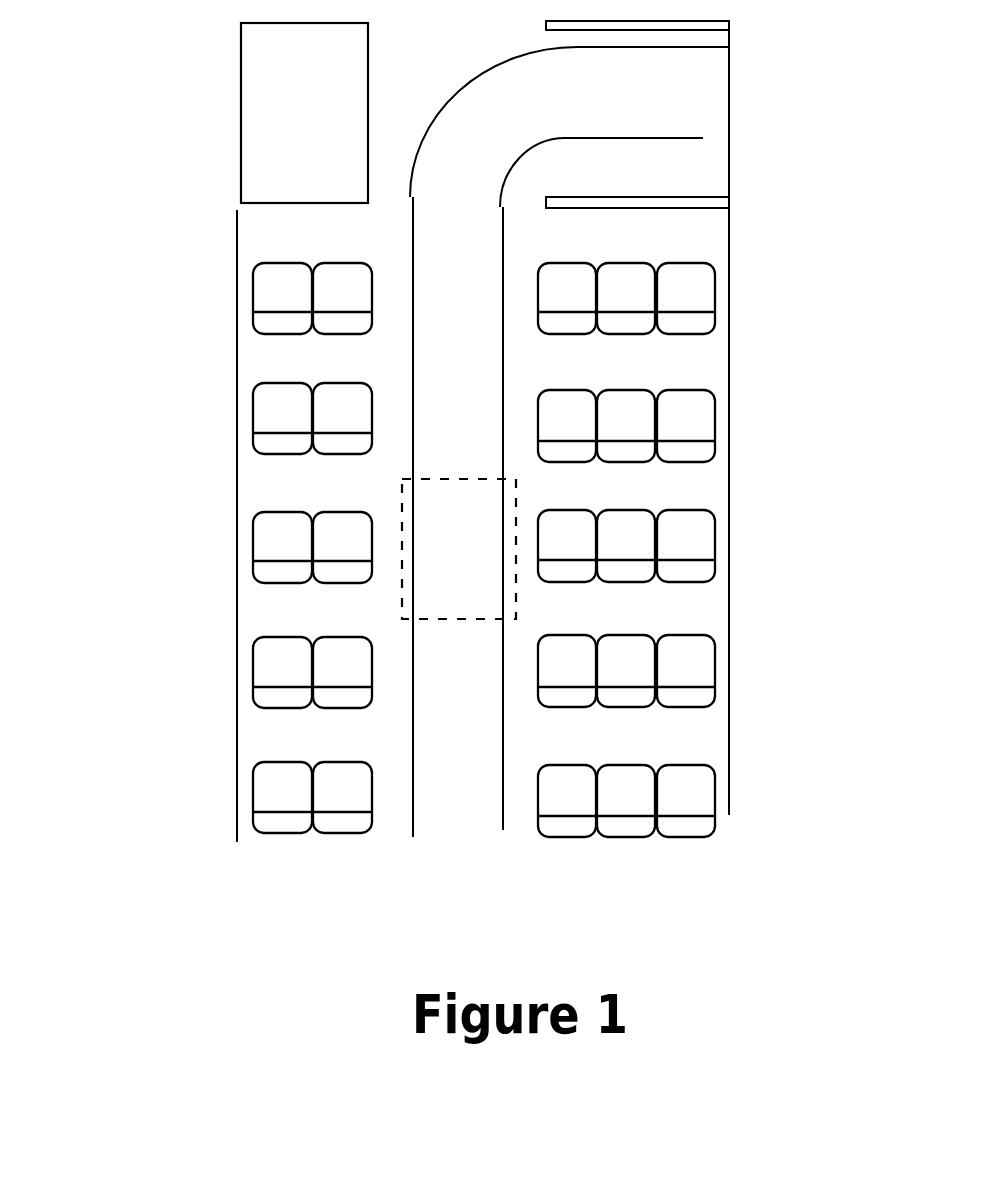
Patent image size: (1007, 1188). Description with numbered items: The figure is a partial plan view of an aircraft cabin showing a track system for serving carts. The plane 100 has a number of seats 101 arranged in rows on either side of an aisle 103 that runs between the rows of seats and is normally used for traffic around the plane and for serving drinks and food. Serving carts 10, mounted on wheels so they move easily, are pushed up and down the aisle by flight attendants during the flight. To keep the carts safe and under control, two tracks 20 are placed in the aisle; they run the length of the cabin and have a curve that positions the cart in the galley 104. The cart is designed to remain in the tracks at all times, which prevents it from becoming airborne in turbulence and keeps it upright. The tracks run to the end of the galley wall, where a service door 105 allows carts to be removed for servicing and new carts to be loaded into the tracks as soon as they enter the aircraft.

The plane 100 is at (198, 656).
The seats 101 is at (280, 658).
The serving carts 10 is at (450, 495).
The tracks 20 is at (504, 697).
The aisle 103 is at (472, 805).
The galley 104 is at (710, 117).
The service door 105 is at (732, 75).